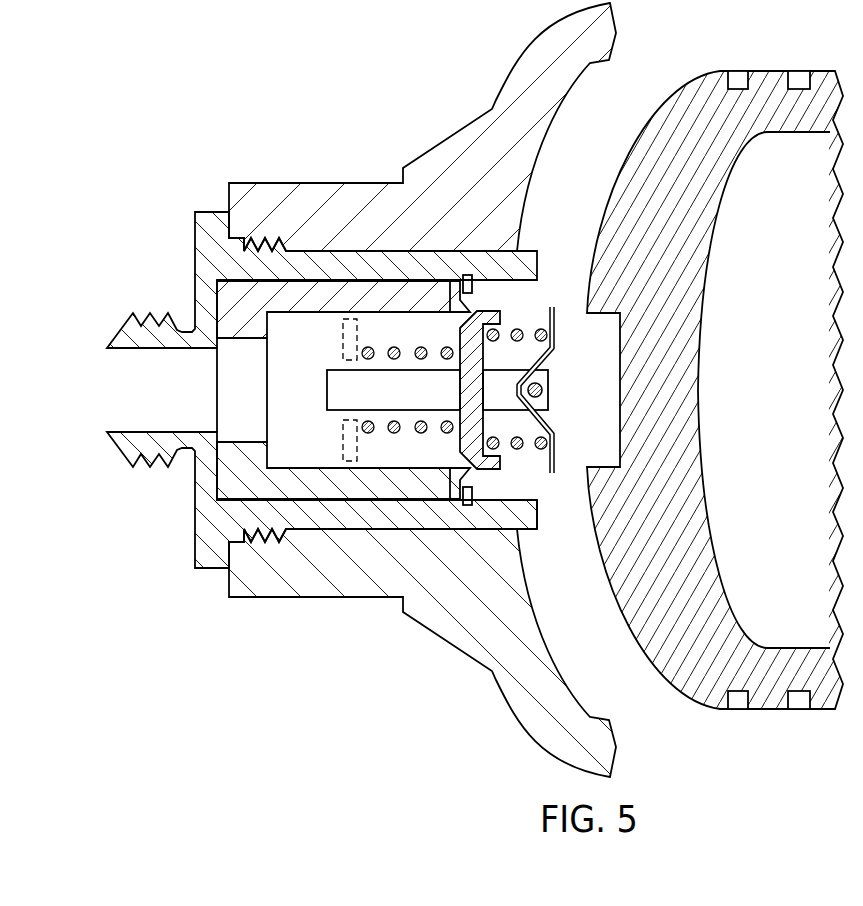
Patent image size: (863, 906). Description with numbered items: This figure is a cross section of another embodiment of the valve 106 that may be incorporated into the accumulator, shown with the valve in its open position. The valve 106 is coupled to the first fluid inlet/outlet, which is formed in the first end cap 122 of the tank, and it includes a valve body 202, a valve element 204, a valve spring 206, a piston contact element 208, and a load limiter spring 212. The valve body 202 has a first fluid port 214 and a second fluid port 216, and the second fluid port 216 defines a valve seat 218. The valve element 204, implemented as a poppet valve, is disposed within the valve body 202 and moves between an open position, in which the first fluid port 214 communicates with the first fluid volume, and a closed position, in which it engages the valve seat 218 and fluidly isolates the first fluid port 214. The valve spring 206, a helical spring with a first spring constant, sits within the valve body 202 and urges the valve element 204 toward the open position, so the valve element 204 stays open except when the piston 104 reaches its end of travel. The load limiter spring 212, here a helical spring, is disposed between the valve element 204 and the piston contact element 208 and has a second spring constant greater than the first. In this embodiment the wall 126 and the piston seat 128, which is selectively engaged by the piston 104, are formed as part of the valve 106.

The piston 104 is at (772, 71).
The valve 106 is at (109, 245).
The first end cap 122 is at (462, 128).
The wall 126 is at (353, 529).
The piston seat 128 is at (537, 529).
The valve body 202 is at (195, 532).
The valve element 204 is at (505, 311).
The valve spring 206 is at (421, 348).
The piston contact element 208 is at (554, 440).
The load limiter spring 212 is at (546, 337).
The first fluid port 214 is at (104, 386).
The second fluid port 216 is at (472, 474).
The valve seat 218 is at (473, 293).